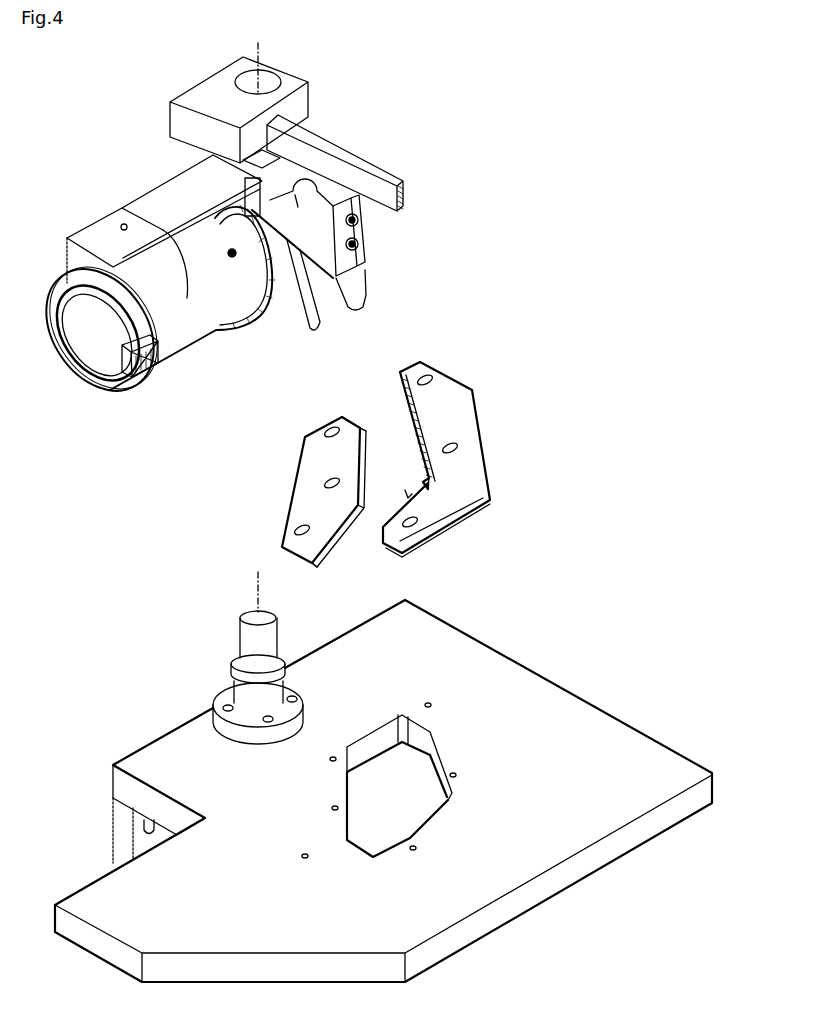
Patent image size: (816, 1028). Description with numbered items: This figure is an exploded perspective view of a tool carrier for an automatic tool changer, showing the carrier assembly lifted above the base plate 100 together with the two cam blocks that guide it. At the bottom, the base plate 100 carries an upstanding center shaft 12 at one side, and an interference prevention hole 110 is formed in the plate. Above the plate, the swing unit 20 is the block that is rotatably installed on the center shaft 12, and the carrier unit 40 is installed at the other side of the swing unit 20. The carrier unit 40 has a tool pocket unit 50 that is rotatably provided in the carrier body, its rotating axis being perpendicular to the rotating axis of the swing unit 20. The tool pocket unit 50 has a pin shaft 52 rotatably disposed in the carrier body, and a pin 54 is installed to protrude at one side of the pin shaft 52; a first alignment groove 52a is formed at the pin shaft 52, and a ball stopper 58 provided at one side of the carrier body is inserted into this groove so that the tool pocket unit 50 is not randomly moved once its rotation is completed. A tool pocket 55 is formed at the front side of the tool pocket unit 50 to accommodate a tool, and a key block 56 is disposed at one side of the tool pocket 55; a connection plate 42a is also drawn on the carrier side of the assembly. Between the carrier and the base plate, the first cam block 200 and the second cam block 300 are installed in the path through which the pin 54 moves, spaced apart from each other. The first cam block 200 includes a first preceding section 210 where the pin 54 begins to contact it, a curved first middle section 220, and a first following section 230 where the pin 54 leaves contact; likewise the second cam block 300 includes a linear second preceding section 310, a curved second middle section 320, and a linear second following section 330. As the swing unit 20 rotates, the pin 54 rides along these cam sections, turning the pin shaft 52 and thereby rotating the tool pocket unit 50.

The center shaft 12 is at (245, 652).
The swing unit 20 is at (182, 89).
The carrier unit 40 is at (77, 226).
The connection plate 42a is at (356, 270).
The tool pocket unit 50 is at (213, 333).
The pin shaft 52 is at (307, 264).
The first alignment groove 52a is at (289, 262).
The pin 54 is at (368, 286).
The tool pocket 55 is at (90, 335).
The key block 56 is at (140, 377).
The ball stopper 58 is at (300, 140).
The base plate 100 is at (632, 735).
The interference prevention hole 110 is at (407, 785).
The first cam block 200 is at (490, 463).
The first preceding section 210 is at (420, 490).
The first middle section 220 is at (435, 482).
The first following section 230 is at (401, 403).
The second cam block 300 is at (283, 497).
The second preceding section 310 is at (363, 427).
The second middle section 320 is at (360, 453).
The second following section 330 is at (348, 547).